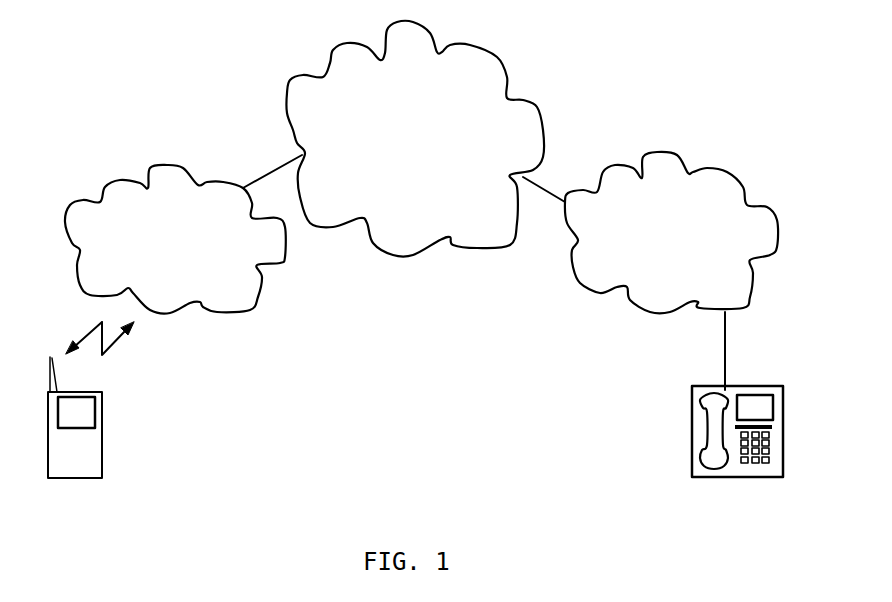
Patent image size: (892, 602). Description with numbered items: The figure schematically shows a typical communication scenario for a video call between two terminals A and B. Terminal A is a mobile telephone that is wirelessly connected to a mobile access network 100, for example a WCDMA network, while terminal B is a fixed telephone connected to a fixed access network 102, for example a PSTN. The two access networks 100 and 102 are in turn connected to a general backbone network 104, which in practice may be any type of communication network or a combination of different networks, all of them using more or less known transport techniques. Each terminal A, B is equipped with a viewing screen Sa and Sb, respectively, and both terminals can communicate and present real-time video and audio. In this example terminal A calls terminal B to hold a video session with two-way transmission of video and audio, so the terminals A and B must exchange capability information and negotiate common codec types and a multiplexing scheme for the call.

The mobile access network 100 is at (199, 250).
The fixed access network 102 is at (704, 249).
The backbone network 104 is at (439, 166).
The terminal A is at (119, 419).
The terminal B is at (742, 427).
The viewing screen Sa is at (82, 412).
The viewing screen Sb is at (765, 407).